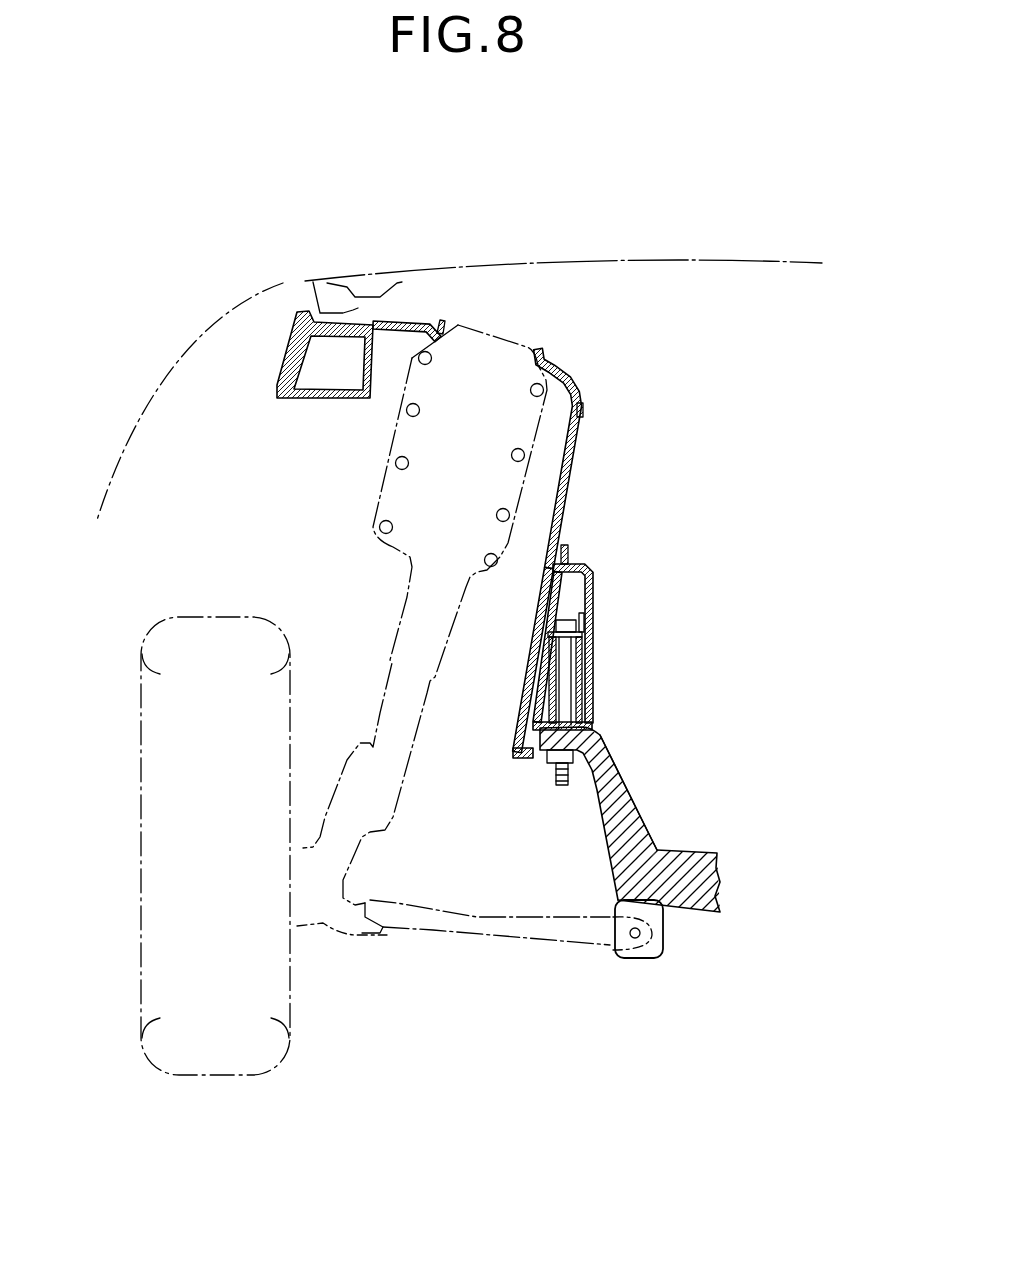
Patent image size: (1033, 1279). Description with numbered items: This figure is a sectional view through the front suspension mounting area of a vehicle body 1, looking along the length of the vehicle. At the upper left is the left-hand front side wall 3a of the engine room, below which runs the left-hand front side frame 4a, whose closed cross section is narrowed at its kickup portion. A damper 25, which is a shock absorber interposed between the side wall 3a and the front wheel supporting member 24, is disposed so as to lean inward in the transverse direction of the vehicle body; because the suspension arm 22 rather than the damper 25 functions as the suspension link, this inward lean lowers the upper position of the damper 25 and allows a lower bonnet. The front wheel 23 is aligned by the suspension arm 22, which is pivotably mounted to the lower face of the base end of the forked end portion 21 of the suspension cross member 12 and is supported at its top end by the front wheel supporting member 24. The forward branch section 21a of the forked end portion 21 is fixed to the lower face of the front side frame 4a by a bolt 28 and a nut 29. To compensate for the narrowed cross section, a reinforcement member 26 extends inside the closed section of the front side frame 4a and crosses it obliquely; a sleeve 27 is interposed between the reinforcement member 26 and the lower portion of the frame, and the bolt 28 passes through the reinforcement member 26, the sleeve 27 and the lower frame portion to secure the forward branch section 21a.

The vehicle body 1 is at (291, 276).
The left-hand front side wall 3a is at (573, 460).
The left-hand front side frame 4a is at (582, 563).
The suspension cross member 12 is at (692, 852).
The forked end portion 21 is at (590, 817).
The forward branch section 21a is at (620, 795).
The suspension arm 22 is at (492, 930).
The front wheel 23 is at (147, 965).
The front wheel supporting member 24 is at (322, 923).
The damper 25 is at (392, 635).
The reinforcement member 26 is at (527, 688).
The sleeve 27 is at (580, 667).
The bolt 28 is at (567, 617).
The nut 29 is at (548, 763).